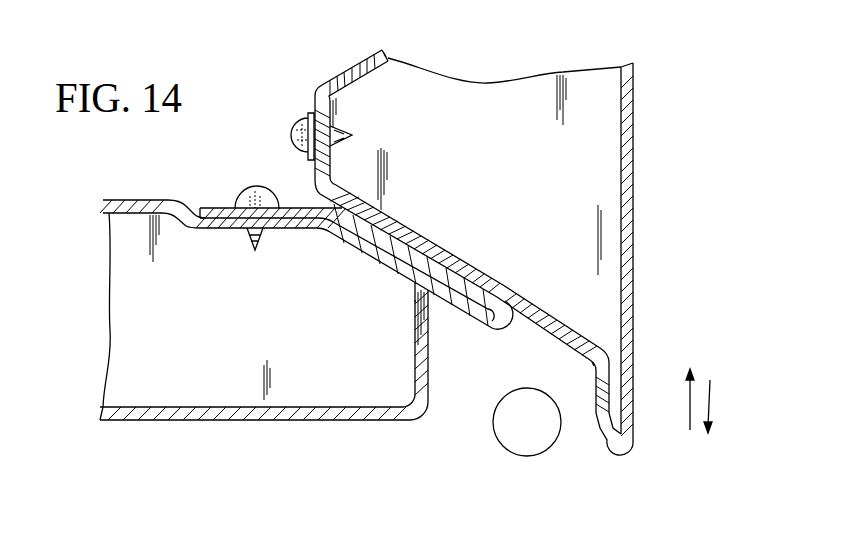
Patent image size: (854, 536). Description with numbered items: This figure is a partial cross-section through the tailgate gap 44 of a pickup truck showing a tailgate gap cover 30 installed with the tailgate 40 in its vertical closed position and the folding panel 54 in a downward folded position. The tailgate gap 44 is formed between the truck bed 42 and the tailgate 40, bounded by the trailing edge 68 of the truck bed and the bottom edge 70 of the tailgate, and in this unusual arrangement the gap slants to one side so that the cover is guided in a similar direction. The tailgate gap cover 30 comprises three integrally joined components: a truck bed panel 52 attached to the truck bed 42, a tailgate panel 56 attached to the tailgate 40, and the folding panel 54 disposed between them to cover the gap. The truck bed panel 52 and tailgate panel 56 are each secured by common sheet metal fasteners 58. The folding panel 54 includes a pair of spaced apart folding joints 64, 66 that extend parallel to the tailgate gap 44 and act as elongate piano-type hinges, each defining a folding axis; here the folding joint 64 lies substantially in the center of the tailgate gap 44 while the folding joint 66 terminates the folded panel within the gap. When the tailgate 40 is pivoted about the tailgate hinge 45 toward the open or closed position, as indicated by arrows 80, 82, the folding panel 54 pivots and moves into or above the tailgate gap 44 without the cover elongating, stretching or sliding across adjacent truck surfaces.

The tailgate gap cover 30 is at (277, 62).
The tailgate 40 is at (598, 67).
The truck bed 42 is at (143, 200).
The tailgate gap 44 is at (457, 425).
The tailgate hinge 45 is at (556, 440).
The truck bed panel 52 is at (212, 208).
The folding panel 54 is at (352, 226).
The tailgate panel 56 is at (312, 100).
The sheet metal fastener 58 is at (299, 122).
The folding joint 64 is at (302, 196).
The folding joint 66 is at (506, 308).
The trailing edge of the truck bed 68 is at (428, 335).
The bottom edge of the tailgate 70 is at (574, 350).
The arrow 80 is at (710, 380).
The arrow 82 is at (688, 386).